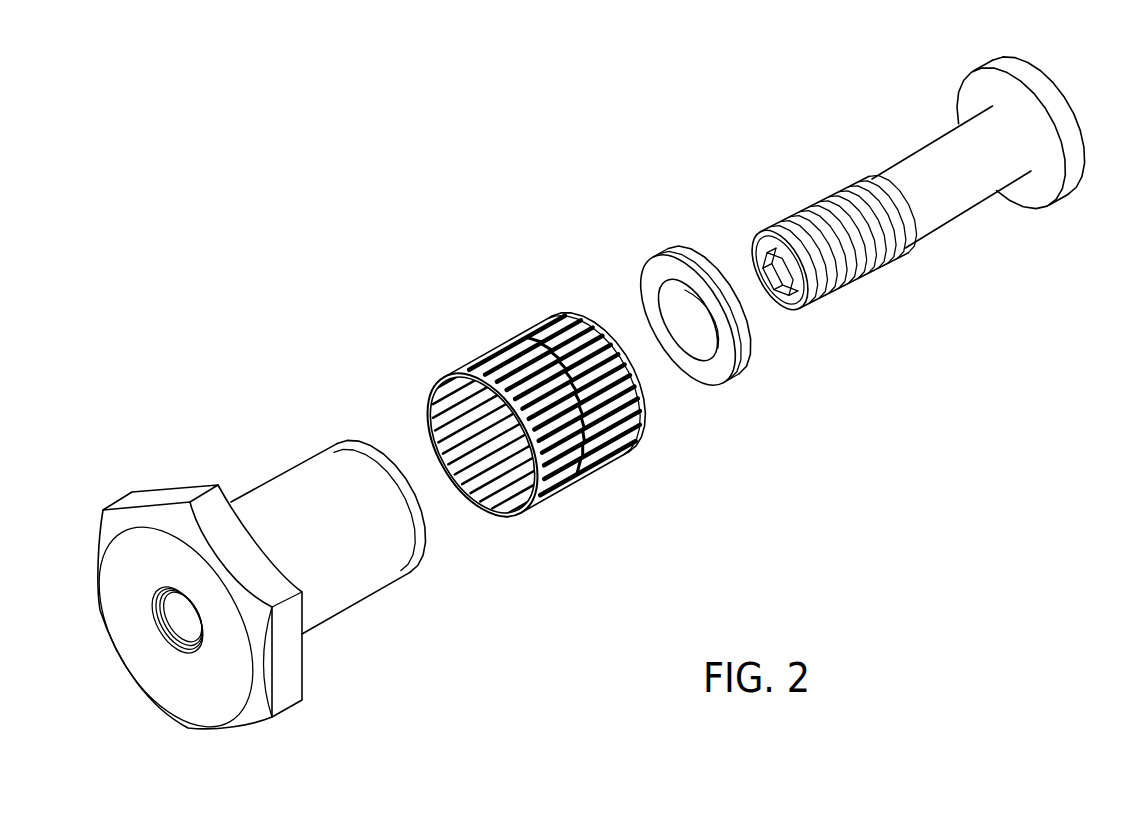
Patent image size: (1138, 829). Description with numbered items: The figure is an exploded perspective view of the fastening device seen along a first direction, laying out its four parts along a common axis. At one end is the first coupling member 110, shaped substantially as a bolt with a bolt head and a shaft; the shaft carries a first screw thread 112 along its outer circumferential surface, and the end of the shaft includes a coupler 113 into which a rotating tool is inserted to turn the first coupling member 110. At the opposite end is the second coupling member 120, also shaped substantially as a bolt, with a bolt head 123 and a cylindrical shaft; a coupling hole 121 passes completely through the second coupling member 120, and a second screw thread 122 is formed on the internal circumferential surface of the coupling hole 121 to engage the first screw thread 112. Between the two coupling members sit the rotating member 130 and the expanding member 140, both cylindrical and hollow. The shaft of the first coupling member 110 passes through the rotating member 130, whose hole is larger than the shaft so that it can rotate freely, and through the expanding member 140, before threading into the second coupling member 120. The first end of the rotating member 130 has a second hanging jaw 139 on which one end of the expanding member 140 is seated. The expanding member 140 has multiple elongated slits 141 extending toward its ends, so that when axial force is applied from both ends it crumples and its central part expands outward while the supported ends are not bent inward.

The first coupling member 110 is at (913, 188).
The first screw thread 112 is at (842, 192).
The coupler 113 is at (762, 268).
The second coupling member 120 is at (246, 611).
The coupling hole 121 is at (173, 617).
The second screw thread 122 is at (185, 633).
The bolt head 123 is at (217, 703).
The rotating member 130 is at (725, 324).
The second hanging jaw 139 is at (740, 360).
The expanding member 140 is at (525, 418).
The slits 141 is at (560, 360).